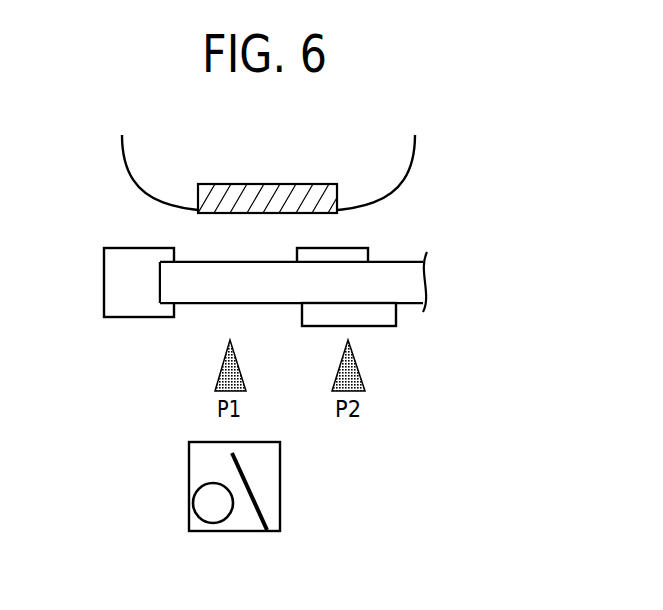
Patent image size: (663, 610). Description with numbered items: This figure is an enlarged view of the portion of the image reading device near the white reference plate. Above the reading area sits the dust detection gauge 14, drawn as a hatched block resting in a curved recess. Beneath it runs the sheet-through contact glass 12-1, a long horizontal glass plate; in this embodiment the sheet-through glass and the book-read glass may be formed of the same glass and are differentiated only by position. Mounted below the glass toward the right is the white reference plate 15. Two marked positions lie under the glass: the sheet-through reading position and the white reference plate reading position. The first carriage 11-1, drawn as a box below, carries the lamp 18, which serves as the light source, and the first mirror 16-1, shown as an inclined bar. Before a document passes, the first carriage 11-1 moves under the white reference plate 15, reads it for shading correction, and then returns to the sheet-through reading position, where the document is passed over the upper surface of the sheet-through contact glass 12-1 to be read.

The dust detection gauge 14 is at (283, 184).
The sheet-through contact glass 12-1 is at (202, 303).
The white reference plate 15 is at (380, 326).
The first carriage 11-1 is at (189, 462).
The first mirror 16-1 is at (252, 492).
The lamp 18 is at (198, 502).